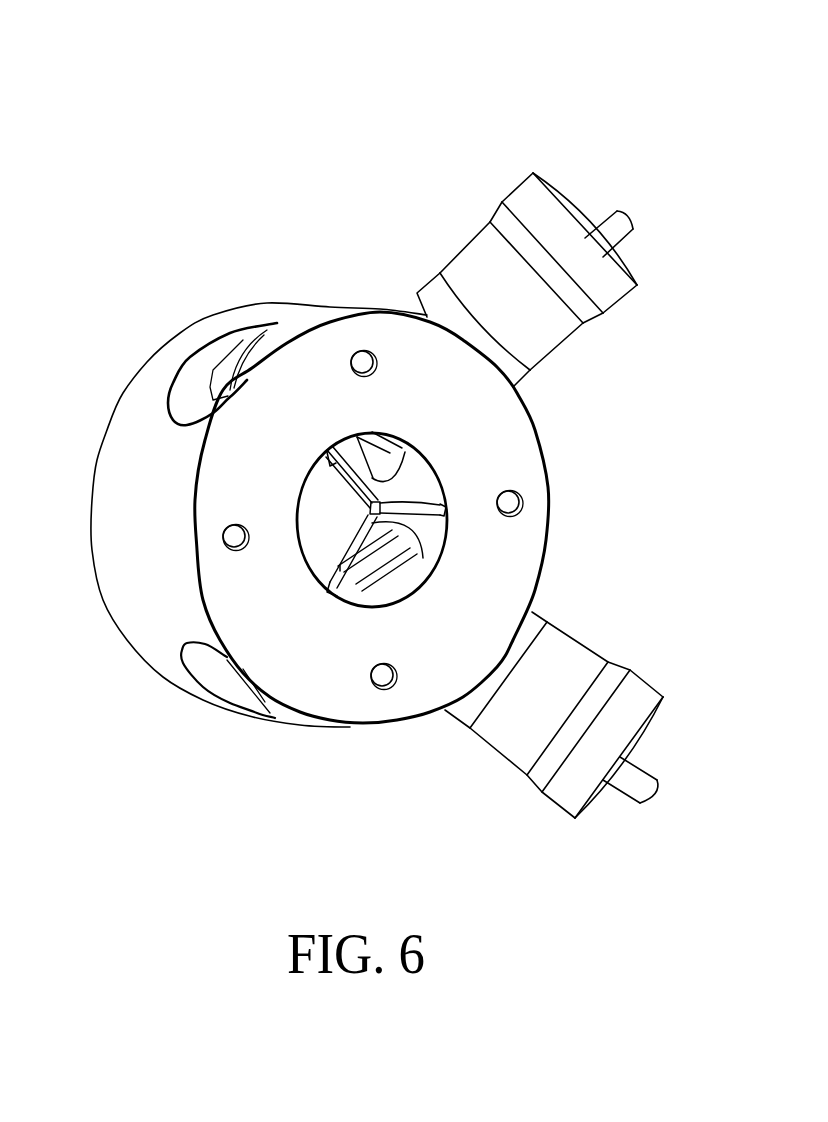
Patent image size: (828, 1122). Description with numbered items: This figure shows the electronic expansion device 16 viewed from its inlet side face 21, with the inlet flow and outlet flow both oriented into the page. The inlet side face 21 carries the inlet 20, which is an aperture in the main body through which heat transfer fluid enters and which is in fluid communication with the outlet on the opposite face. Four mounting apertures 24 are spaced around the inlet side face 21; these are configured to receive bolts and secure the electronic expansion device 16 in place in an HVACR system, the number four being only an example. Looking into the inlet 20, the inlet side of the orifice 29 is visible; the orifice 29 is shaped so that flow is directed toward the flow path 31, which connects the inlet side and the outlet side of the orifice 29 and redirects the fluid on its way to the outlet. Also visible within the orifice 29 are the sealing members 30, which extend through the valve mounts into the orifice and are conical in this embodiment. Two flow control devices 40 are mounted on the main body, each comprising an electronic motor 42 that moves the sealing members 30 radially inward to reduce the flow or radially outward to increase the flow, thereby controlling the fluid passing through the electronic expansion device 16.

The electronic expansion device 16 is at (667, 70).
The inlet 20 is at (304, 532).
The inlet side face 21 is at (208, 459).
The mounting apertures 24 is at (362, 350).
The orifice 29 is at (321, 483).
The sealing members 30 is at (356, 571).
The flow path 31 is at (406, 547).
The flow control devices 40 is at (550, 386).
The electronic motor 42 is at (650, 277).